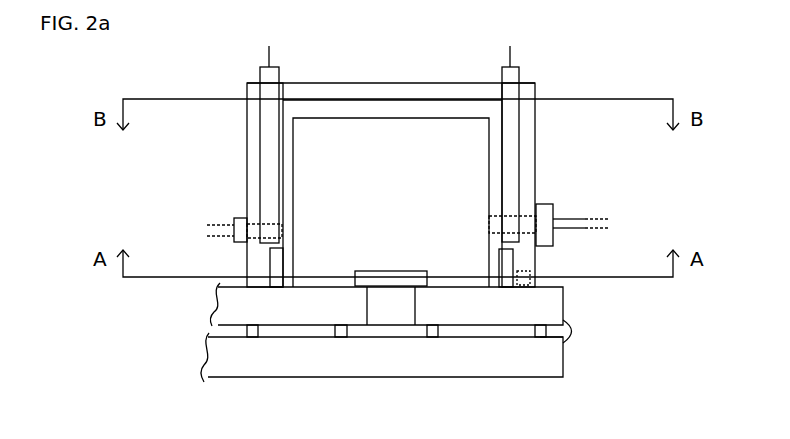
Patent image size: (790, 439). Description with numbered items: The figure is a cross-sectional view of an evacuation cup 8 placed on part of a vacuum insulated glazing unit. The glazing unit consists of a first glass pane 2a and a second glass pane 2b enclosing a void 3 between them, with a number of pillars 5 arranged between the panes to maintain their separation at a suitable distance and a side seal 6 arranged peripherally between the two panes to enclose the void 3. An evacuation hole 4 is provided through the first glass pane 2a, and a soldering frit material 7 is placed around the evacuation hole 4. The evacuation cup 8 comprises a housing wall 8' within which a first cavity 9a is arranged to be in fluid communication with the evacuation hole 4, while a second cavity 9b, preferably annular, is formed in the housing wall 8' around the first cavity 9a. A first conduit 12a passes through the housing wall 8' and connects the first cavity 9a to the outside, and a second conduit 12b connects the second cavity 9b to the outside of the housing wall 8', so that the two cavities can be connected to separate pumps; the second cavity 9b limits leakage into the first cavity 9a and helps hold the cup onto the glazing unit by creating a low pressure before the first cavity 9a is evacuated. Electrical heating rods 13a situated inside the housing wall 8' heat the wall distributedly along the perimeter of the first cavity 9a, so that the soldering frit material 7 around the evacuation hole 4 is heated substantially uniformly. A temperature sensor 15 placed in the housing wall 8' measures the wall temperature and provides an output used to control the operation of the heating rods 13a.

The evacuation cup 8 is at (391, 151).
The housing wall 8' is at (391, 71).
The first cavity 9a is at (404, 158).
The second cavity 9b is at (277, 262).
The electrical heating rods 13a is at (270, 146).
The first conduit 12a is at (498, 228).
The second conduit 12b is at (253, 232).
The temperature sensor 15 is at (525, 268).
The soldering frit material 7 is at (390, 271).
The evacuation hole 4 is at (399, 315).
The first glass pane 2a is at (493, 305).
The second glass pane 2b is at (493, 362).
The void 3 is at (510, 333).
The pillars 5 is at (428, 337).
The side seal 6 is at (571, 327).